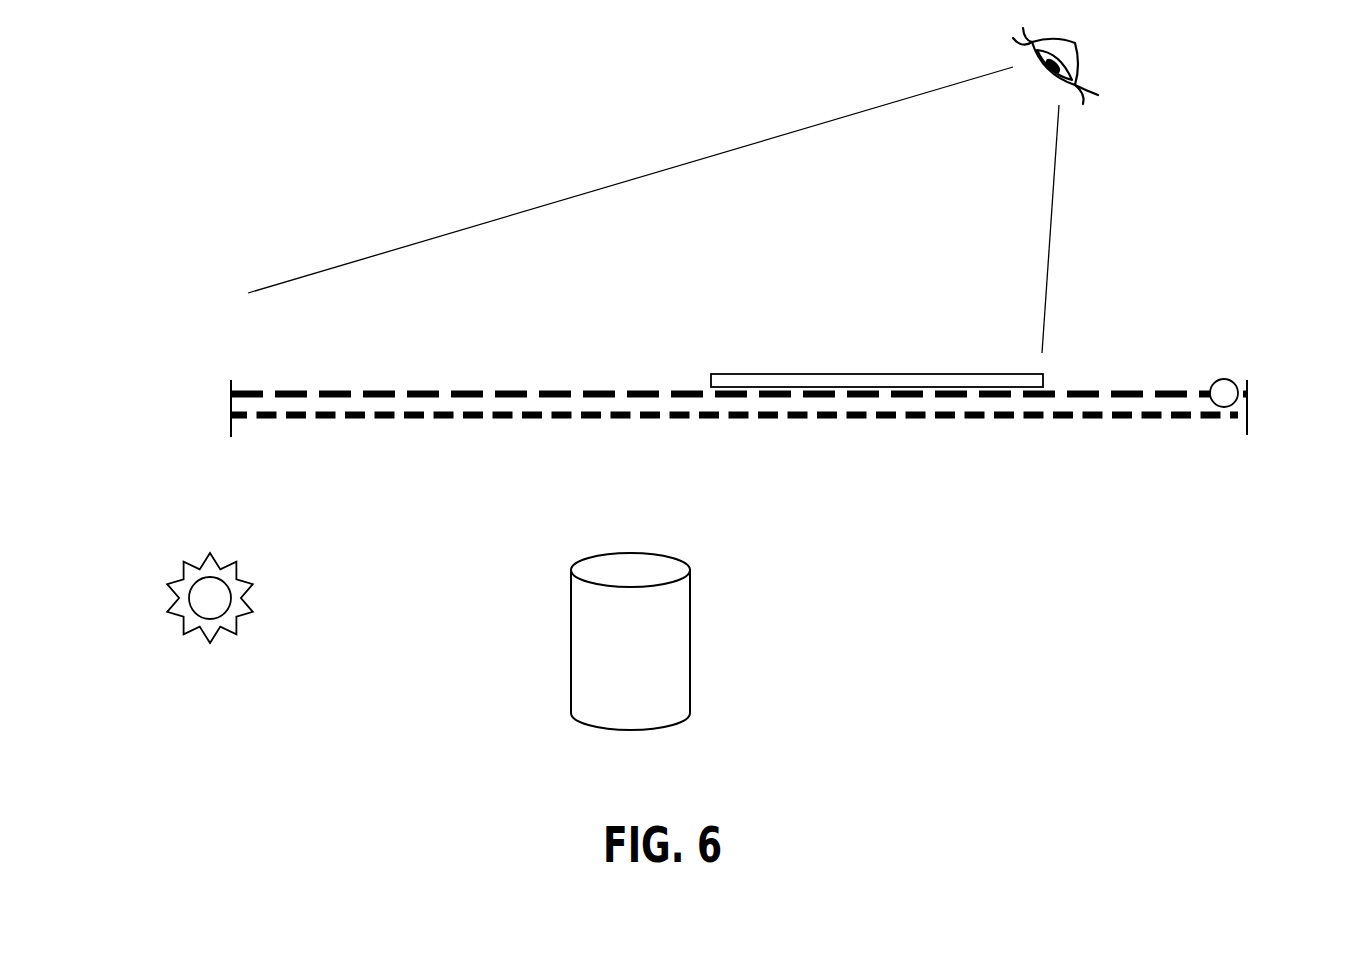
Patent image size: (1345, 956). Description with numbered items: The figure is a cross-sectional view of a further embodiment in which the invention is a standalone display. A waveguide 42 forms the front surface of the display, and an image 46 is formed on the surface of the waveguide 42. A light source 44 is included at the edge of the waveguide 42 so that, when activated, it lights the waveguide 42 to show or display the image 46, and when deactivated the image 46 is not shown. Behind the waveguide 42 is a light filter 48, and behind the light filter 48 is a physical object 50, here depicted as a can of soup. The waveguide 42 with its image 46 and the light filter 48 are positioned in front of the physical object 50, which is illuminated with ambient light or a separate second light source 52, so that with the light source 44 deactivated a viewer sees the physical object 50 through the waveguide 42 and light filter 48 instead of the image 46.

The waveguide 42 is at (370, 390).
The light filter 48 is at (497, 414).
The image 46 is at (1043, 381).
The light source 44 is at (1233, 381).
The physical object 50 is at (690, 642).
The second light source 52 is at (192, 640).